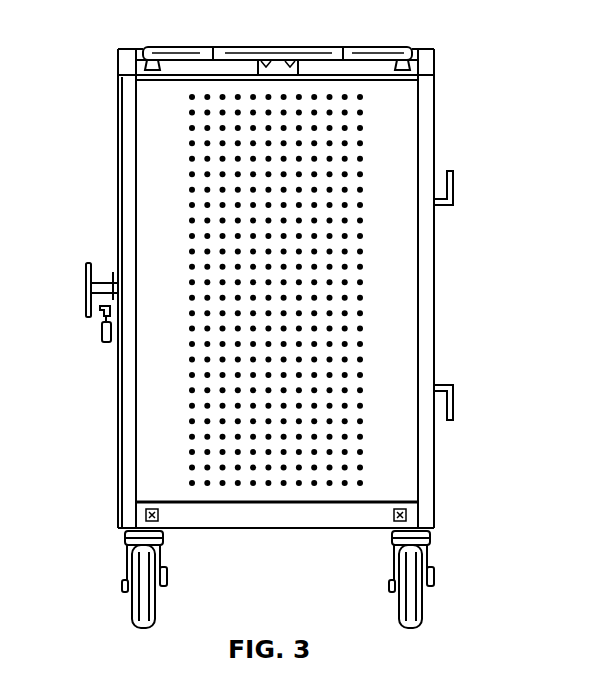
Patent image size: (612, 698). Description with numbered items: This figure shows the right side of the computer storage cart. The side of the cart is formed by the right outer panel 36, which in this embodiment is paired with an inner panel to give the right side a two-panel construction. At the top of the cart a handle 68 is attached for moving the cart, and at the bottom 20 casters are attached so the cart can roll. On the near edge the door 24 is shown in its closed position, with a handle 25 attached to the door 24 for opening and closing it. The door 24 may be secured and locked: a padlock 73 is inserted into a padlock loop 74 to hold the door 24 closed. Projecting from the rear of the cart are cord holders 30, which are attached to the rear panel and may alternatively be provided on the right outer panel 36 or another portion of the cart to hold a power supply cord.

The bottom 20 is at (300, 530).
The door 24 is at (118, 181).
The handle 25 is at (86, 290).
The cord holder 30 is at (455, 188).
The right outer panel 36 is at (140, 425).
The handle 68 is at (336, 50).
The padlock 73 is at (100, 336).
The padlock loop 74 is at (100, 310).